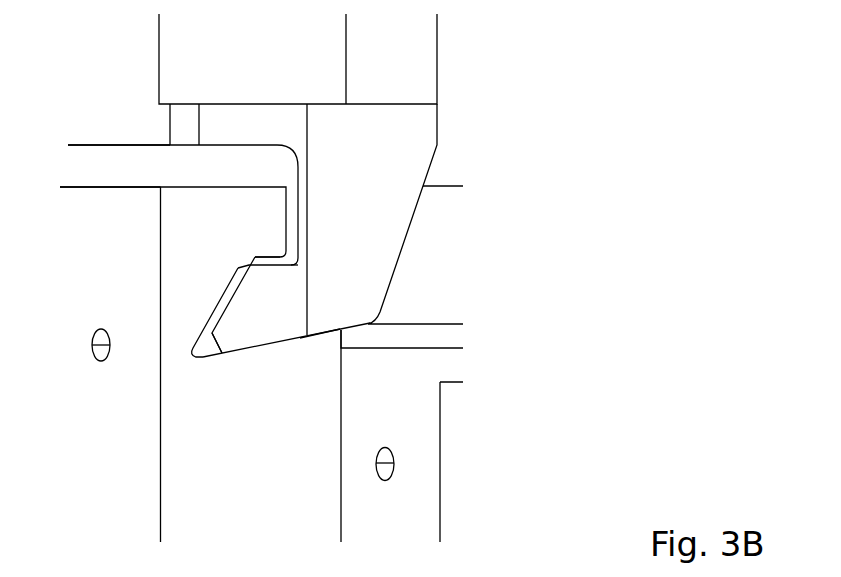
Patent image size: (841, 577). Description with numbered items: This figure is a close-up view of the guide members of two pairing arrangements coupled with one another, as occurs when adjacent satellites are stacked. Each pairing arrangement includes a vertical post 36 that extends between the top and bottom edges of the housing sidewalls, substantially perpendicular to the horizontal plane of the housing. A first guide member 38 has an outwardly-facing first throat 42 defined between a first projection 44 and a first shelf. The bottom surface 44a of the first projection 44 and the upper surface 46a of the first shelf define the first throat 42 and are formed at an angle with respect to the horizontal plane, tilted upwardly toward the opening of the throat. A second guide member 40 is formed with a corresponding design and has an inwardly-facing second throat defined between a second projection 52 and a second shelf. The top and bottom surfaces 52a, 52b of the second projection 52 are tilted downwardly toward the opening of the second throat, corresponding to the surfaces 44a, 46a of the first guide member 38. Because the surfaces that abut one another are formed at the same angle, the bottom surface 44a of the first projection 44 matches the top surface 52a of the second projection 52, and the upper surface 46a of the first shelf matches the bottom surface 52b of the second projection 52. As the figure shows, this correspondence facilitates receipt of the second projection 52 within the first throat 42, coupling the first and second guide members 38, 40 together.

The vertical post 36 is at (301, 48).
The first guide member 38 is at (150, 265).
The second guide member 40 is at (443, 135).
The first throat 42 is at (223, 302).
The first projection 44 is at (262, 223).
The bottom surface of the first projection 44a is at (261, 263).
The upper surface of first shelf 46a is at (240, 350).
The second projection 52 is at (260, 318).
The top surface of the second projection 52a is at (276, 267).
The bottom surface of the second projection 52b is at (280, 347).